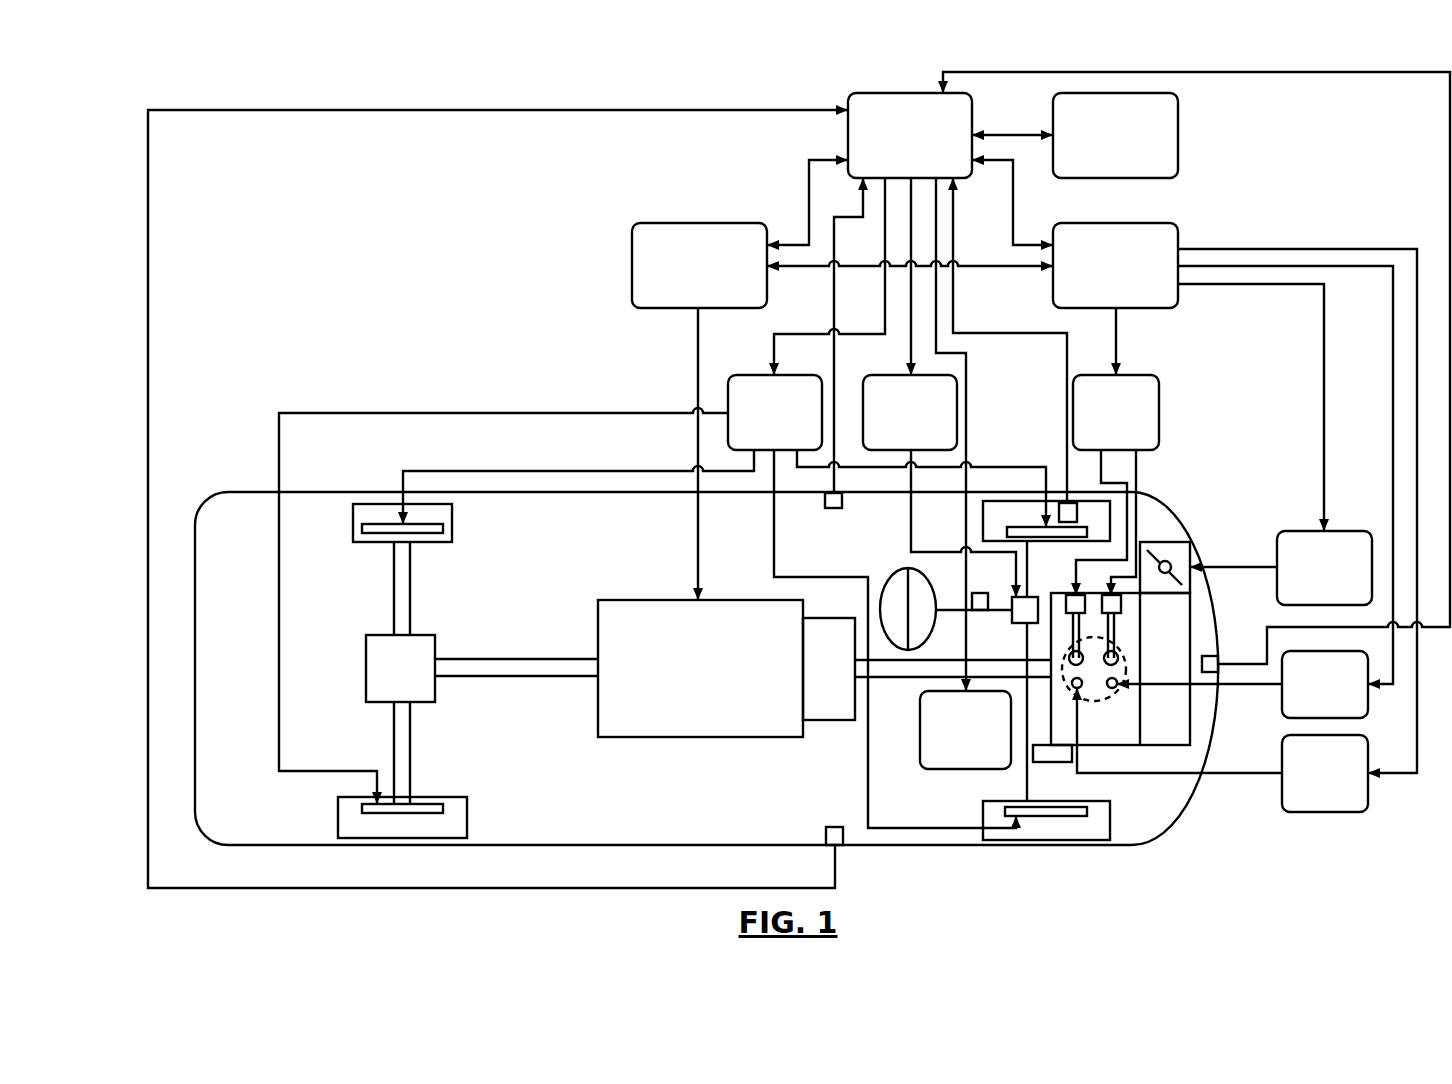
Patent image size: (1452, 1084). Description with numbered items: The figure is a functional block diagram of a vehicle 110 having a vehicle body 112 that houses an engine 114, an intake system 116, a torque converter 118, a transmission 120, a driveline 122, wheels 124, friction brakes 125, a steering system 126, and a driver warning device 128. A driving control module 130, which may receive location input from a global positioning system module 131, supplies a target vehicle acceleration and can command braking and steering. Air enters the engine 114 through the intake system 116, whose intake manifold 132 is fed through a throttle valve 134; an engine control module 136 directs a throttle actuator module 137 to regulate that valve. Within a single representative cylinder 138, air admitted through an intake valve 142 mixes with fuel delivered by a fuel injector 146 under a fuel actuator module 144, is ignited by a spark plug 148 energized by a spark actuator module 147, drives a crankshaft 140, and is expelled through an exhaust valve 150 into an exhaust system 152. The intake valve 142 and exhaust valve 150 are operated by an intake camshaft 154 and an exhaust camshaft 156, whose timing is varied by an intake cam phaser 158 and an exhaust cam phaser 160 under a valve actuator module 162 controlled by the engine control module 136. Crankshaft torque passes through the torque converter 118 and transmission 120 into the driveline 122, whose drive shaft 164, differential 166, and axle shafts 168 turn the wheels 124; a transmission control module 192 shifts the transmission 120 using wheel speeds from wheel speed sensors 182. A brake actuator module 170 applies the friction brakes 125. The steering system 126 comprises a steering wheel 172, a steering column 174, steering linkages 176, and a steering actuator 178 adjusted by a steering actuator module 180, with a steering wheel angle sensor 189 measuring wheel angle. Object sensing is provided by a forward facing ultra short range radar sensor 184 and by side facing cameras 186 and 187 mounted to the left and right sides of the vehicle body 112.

The vehicle 110 is at (148, 92).
The vehicle body 112 is at (326, 490).
The engine 114 is at (1088, 747).
The intake system 116 is at (1193, 557).
The torque converter 118 is at (828, 722).
The transmission 120 is at (698, 740).
The driveline 122 is at (538, 617).
The wheels 124 is at (353, 522).
The friction brakes 125 is at (383, 524).
The steering system 126 is at (892, 538).
The driver warning device 128 is at (920, 732).
The driving control module 130 is at (973, 105).
The global positioning system module 131 is at (1180, 133).
The intake manifold 132 is at (1190, 635).
The throttle valve 134 is at (1165, 542).
The engine control module 136 is at (1118, 223).
The throttle actuator module 137 is at (1298, 531).
The cylinder 138 is at (1121, 655).
The crankshaft 140 is at (927, 678).
The intake valve 142 is at (1080, 662).
The fuel actuator module 144 is at (1280, 705).
The fuel injector 146 is at (1118, 688).
The spark actuator module 147 is at (1280, 792).
The spark plug 148 is at (1077, 695).
The exhaust valve 150 is at (1125, 665).
The exhaust system 152 is at (1053, 763).
The intake camshaft 154 is at (1072, 630).
The exhaust camshaft 156 is at (1113, 630).
The intake cam phaser 158 is at (1074, 598).
The exhaust cam phaser 160 is at (1121, 604).
The valve actuator module 162 is at (1145, 375).
The drive shaft 164 is at (517, 677).
The differential 166 is at (366, 667).
The axle shafts 168 is at (394, 587).
The brake actuator module 170 is at (758, 375).
The steering wheel 172 is at (893, 573).
The steering column 174 is at (962, 605).
The steering linkages 176 is at (1030, 568).
The steering actuator 178 is at (1011, 595).
The steering actuator module 180 is at (883, 375).
The wheel speed sensors 182 is at (1062, 503).
The forward facing ultra short range radar sensor 184 is at (1207, 655).
The side facing camera 186 is at (828, 510).
The side facing camera 187 is at (827, 828).
The steering wheel angle sensor 189 is at (980, 610).
The transmission control module 192 is at (700, 223).